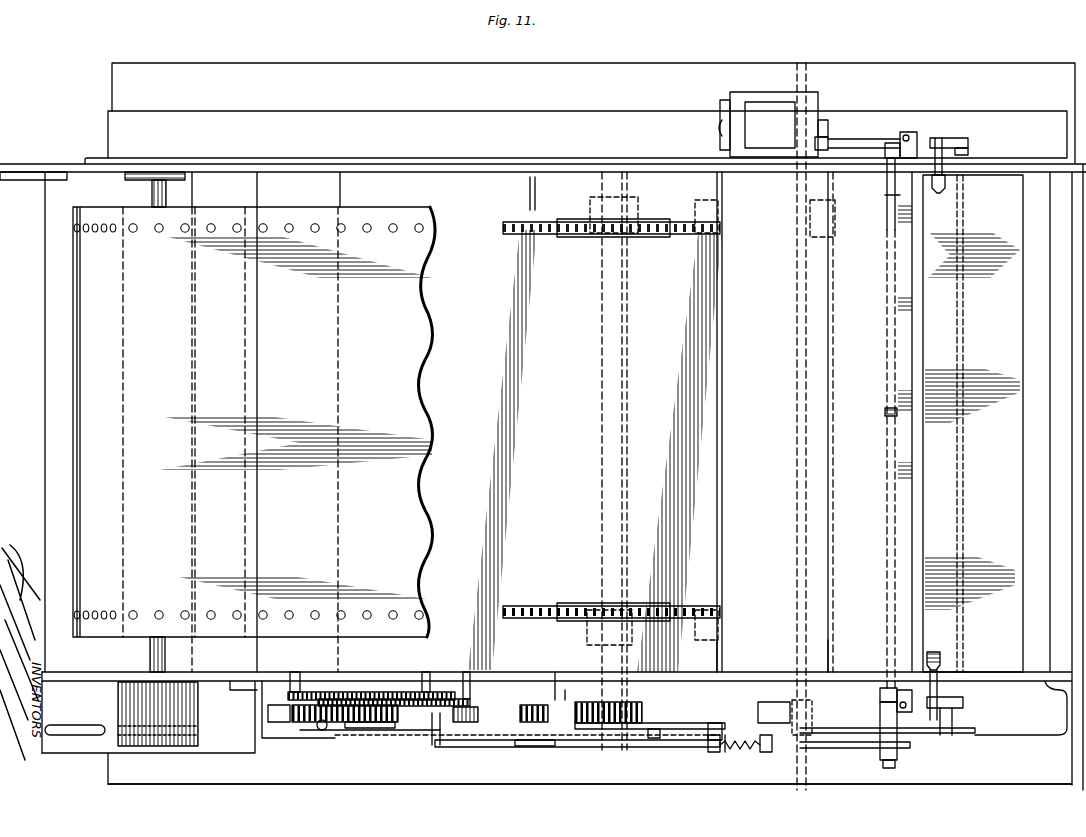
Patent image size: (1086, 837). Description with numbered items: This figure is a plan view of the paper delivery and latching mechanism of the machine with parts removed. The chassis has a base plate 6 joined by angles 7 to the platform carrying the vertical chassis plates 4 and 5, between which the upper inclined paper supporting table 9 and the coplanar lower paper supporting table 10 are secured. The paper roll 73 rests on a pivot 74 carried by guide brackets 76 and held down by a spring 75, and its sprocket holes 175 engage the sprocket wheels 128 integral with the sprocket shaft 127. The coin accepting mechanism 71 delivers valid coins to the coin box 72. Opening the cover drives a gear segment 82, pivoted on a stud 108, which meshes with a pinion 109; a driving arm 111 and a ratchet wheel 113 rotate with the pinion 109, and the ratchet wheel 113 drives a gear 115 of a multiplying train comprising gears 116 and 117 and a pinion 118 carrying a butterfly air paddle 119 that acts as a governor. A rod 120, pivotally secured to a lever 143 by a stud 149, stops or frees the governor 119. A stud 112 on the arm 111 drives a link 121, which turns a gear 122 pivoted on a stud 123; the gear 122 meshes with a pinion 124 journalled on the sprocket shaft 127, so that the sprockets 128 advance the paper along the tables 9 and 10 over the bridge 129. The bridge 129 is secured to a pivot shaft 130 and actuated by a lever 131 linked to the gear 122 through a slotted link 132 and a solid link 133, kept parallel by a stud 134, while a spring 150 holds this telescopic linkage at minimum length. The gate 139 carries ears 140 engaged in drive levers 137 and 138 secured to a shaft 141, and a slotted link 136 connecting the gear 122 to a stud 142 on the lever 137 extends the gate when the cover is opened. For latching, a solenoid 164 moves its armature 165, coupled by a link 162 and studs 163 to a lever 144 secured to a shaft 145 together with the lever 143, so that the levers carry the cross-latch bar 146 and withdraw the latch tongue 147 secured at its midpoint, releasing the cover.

The chassis plate 4 is at (1034, 690).
The chassis plate 5 is at (1018, 170).
The base plate 6 is at (999, 66).
The angles 7 is at (1067, 125).
The upper inclined paper supporting table 9 is at (712, 666).
The lower paper supporting table 10 is at (836, 647).
The coin accepting mechanism 71 is at (82, 740).
The coin box 72 is at (222, 745).
The paper roll 73 is at (74, 378).
The pivot 74 is at (162, 176).
The spring 75 is at (140, 180).
The guide brackets 76 is at (68, 176).
The gear segment 82 is at (280, 722).
The stud 108 is at (306, 722).
The pinion 109 is at (425, 731).
The driving arm 111 is at (322, 730).
The stud 112 is at (346, 729).
The ratchet wheel 113 is at (298, 709).
The gear 115 is at (298, 690).
The gear 116 is at (430, 690).
The gear 117 is at (440, 735).
The pinion 118 is at (470, 702).
The butterfly air paddle 119 is at (478, 715).
The rod 120 is at (468, 748).
The link 121 is at (420, 738).
The gear 122 is at (546, 705).
The stud 123 is at (565, 690).
The pinion 124 is at (645, 712).
The sprocket shaft 127 is at (600, 640).
The sprocket wheels 128 is at (590, 235).
The paper bridge 129 is at (722, 286).
The pivot shaft 130 is at (810, 80).
The lever 131 is at (782, 727).
The slotted link 132 is at (730, 735).
The solid link 133 is at (690, 722).
The stud 134 is at (655, 729).
The slotted link 136 is at (805, 735).
The drive lever 137 is at (963, 700).
The drive lever 138 is at (965, 139).
The gate 139 is at (1023, 235).
The ears 140 is at (943, 193).
The shaft 141 is at (965, 215).
The stud 142 is at (952, 718).
The lever 143 is at (878, 697).
The lever 144 is at (885, 150).
The shaft 145 is at (890, 200).
The cross-latch bar 146 is at (912, 135).
The latch tongue 147 is at (885, 413).
The stud 149 is at (880, 713).
The spring 150 is at (748, 752).
The link 162 is at (860, 139).
The studs 163 is at (826, 135).
The latch solenoid 164 is at (741, 95).
The armature 165 is at (722, 128).
The sprocket holes 175 is at (419, 232).